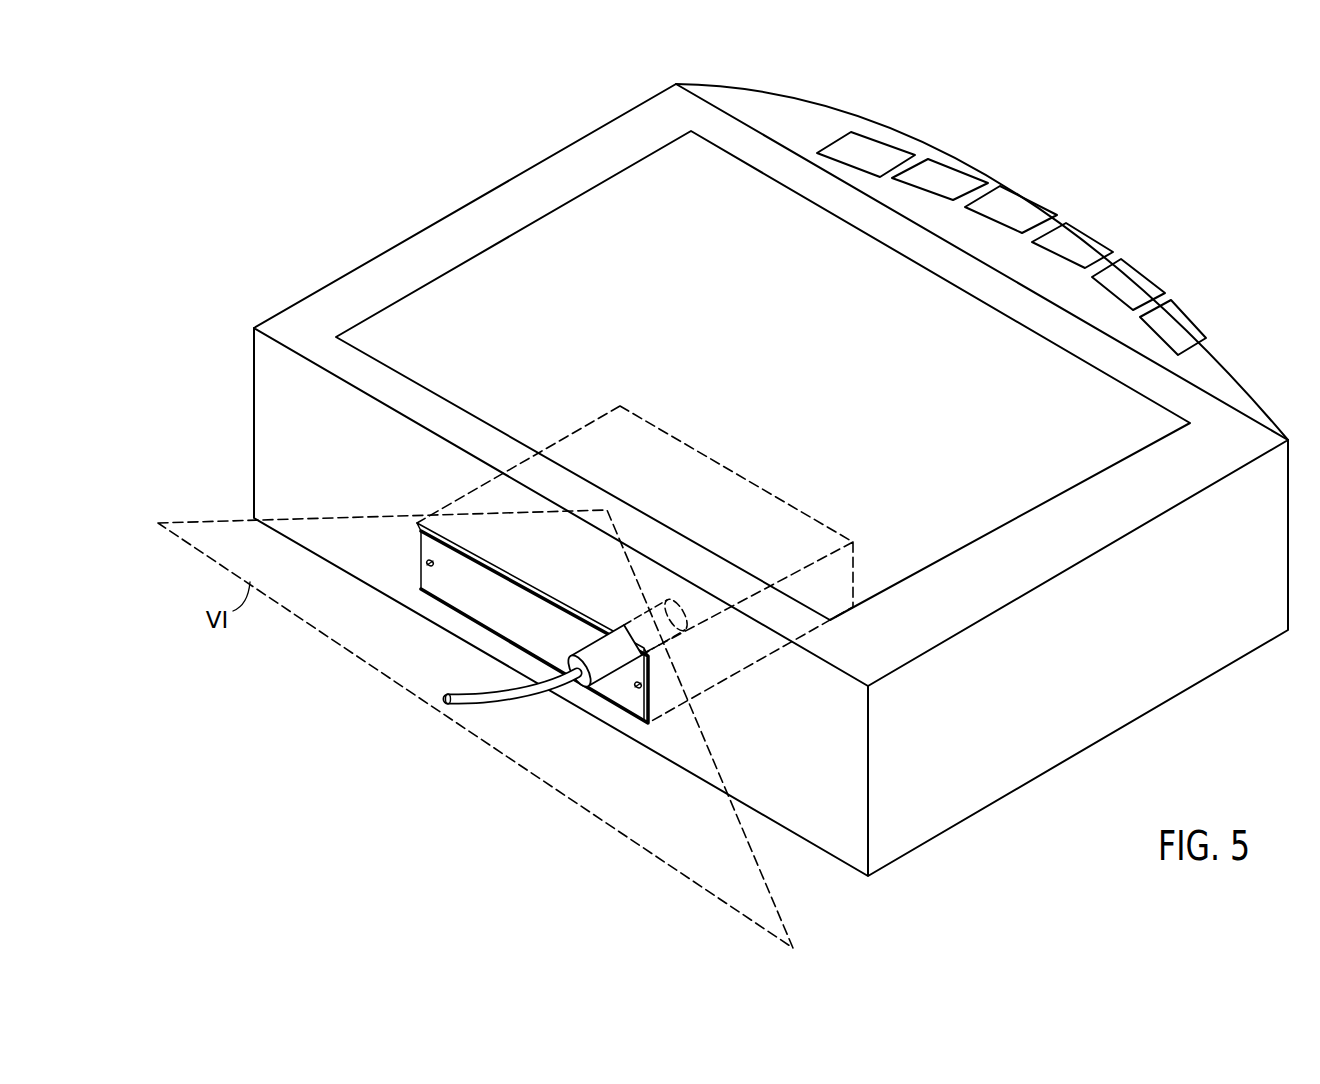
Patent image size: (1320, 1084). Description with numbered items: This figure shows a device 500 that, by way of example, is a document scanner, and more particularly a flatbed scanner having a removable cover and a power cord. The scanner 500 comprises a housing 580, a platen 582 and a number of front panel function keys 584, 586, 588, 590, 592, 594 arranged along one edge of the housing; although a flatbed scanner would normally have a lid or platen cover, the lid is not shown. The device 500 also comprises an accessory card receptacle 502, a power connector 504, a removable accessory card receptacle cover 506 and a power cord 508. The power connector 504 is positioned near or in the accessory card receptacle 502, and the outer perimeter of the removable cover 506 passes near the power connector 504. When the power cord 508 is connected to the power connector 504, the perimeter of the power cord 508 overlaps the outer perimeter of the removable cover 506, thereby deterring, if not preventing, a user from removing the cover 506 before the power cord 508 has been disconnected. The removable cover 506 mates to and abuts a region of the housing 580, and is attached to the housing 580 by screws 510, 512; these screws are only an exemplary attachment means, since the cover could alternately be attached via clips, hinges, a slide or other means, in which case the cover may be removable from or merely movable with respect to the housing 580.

The device 500 is at (213, 356).
The accessory card receptacle 502 is at (760, 488).
The power connector 504 is at (635, 620).
The removable accessory card receptacle cover 506 is at (487, 578).
The power cord 508 is at (525, 692).
The screw 510 is at (418, 573).
The screw 512 is at (636, 690).
The housing 580 is at (1152, 710).
The platen 582 is at (541, 215).
The front panel function key 584 is at (882, 142).
The front panel function key 586 is at (962, 167).
The front panel function key 588 is at (1030, 198).
The front panel function key 590 is at (1090, 233).
The front panel function key 592 is at (1145, 270).
The front panel function key 594 is at (1190, 317).